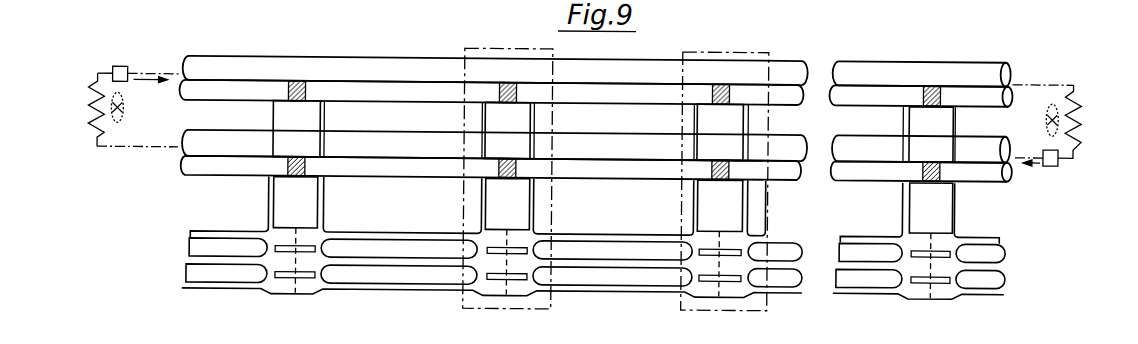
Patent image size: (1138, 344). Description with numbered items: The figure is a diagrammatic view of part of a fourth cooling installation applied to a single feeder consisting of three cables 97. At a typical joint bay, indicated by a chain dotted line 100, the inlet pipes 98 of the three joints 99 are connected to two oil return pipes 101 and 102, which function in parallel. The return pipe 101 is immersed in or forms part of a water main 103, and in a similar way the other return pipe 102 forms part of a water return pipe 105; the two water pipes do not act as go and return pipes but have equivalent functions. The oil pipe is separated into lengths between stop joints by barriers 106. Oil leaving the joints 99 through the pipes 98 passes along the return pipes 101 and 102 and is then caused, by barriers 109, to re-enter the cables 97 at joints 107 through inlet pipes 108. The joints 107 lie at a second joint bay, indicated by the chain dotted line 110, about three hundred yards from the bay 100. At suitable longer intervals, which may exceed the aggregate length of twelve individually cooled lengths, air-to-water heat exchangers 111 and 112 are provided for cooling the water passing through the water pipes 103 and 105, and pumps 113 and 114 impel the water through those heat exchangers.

The cables 97 is at (653, 287).
The inlet pipes 98 is at (700, 199).
The joints 99 is at (727, 285).
The joint bay 100 is at (727, 309).
The oil return pipe 101 is at (700, 95).
The oil return pipe 102 is at (693, 169).
The water main 103 is at (633, 69).
The water return pipe 105 is at (658, 144).
The barriers 106 is at (722, 84).
The joints 107 is at (540, 260).
The inlet pipes 108 is at (538, 197).
The barriers 109 is at (515, 99).
The joint bay 110 is at (530, 308).
The heat exchanger 111 is at (88, 87).
The heat exchanger 112 is at (1078, 85).
The pump 113 is at (124, 68).
The pump 114 is at (1053, 160).